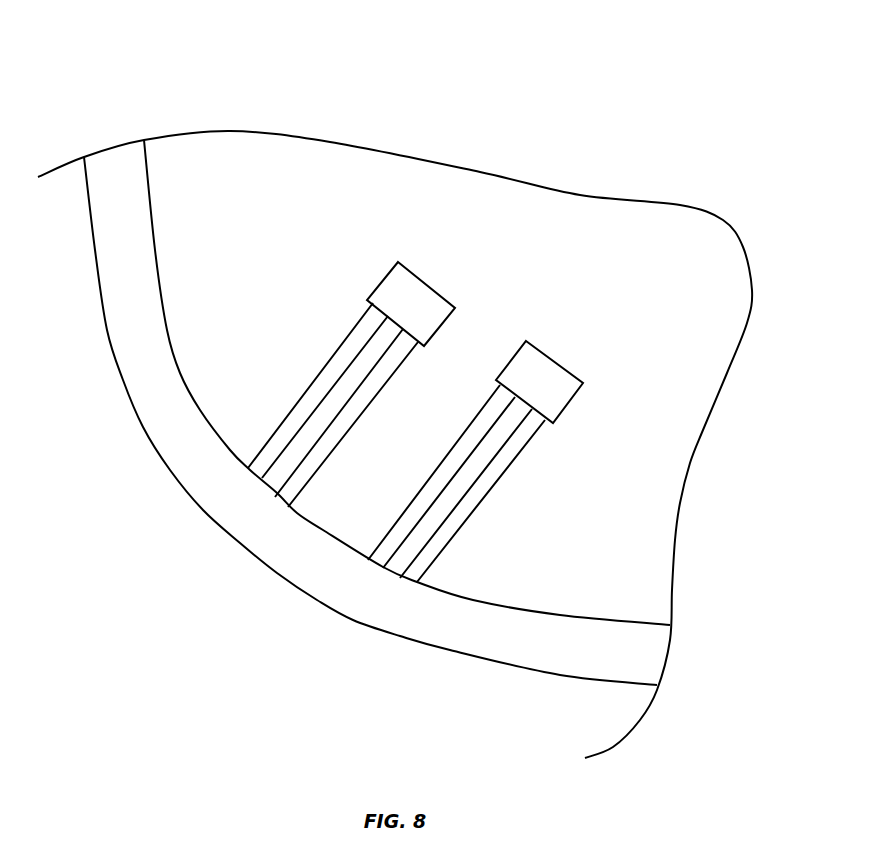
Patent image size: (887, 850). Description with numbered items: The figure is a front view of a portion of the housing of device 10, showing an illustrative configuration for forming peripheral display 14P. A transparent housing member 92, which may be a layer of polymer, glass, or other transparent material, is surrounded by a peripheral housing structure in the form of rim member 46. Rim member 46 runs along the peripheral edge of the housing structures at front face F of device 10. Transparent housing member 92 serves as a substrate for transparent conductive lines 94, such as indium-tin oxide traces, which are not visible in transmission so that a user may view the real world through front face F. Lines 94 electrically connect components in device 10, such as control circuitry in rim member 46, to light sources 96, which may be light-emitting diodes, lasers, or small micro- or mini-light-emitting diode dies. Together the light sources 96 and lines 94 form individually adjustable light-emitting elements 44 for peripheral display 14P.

The device 10 is at (803, 79).
The transparent housing member 92 is at (368, 148).
The peripheral display 14P is at (233, 332).
The rim member 46 is at (327, 597).
The light-emitting elements 44 is at (438, 404).
The light sources 96 is at (393, 288).
The transparent conductive lines 94 is at (318, 436).
The front face F is at (224, 196).